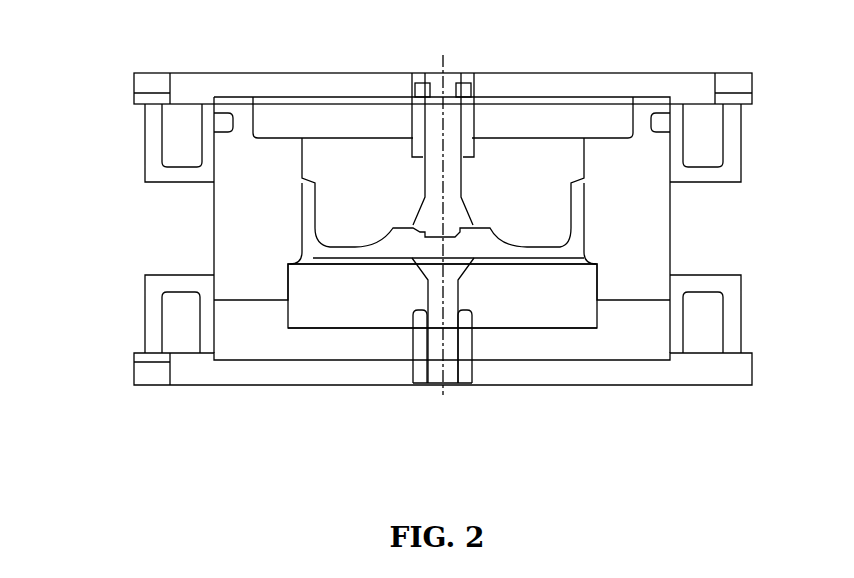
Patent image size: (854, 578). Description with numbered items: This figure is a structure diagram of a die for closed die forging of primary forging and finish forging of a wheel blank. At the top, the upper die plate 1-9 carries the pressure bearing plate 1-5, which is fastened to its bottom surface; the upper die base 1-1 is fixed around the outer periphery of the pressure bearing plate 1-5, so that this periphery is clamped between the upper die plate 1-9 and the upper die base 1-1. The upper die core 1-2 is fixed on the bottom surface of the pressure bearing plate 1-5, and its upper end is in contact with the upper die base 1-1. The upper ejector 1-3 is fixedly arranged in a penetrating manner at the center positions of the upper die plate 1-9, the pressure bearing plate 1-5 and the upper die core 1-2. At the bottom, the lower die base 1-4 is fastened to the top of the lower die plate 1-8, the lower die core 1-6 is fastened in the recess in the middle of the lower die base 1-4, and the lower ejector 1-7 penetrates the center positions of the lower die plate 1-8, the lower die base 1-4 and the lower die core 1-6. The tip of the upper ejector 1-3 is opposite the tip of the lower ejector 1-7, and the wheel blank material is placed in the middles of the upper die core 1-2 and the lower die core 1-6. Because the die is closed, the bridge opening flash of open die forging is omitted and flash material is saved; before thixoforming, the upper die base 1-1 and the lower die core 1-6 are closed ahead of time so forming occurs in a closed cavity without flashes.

The upper die base 1-1 is at (650, 128).
The upper die core 1-2 is at (560, 150).
The upper ejector 1-3 is at (447, 140).
The lower die base 1-4 is at (670, 298).
The pressure bearing plate 1-5 is at (258, 127).
The lower die core 1-6 is at (325, 290).
The lower ejector 1-7 is at (440, 342).
The lower die plate 1-8 is at (316, 368).
The upper die plate 1-9 is at (250, 73).